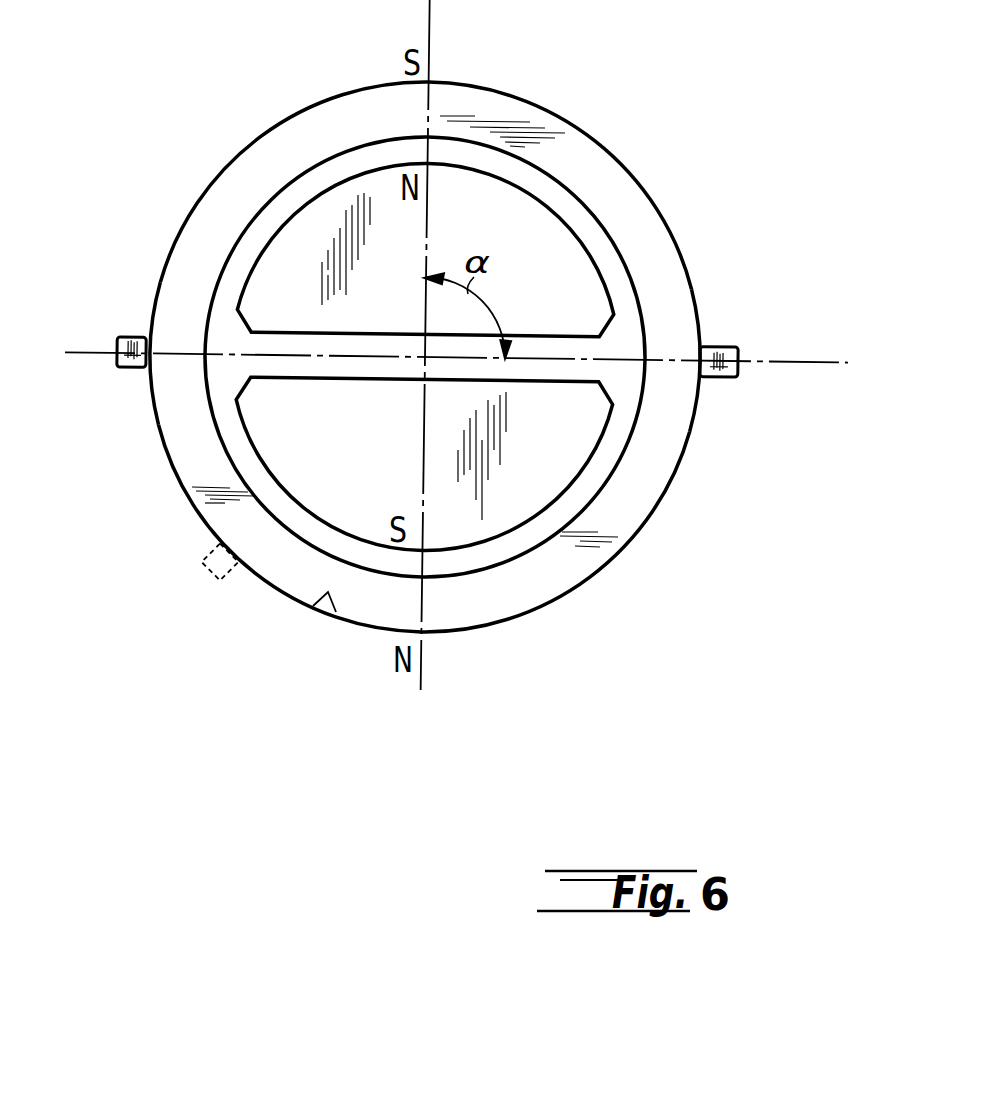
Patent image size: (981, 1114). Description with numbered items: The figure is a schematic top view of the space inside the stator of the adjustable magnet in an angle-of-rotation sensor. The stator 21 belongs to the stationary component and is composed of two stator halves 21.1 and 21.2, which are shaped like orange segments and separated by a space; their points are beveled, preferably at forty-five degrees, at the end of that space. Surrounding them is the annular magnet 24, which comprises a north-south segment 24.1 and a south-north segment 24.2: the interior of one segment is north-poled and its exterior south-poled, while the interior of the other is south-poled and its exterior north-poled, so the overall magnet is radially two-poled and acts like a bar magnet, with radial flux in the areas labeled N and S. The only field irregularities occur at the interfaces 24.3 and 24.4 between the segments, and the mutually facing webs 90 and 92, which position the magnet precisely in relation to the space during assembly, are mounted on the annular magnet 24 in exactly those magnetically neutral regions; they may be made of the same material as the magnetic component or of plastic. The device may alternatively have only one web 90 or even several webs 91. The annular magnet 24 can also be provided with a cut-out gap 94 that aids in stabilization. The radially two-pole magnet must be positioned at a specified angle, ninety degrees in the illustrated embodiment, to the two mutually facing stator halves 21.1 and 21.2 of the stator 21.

The stator 21 is at (560, 304).
The stator half 21.1 is at (566, 265).
The stator half 21.2 is at (541, 478).
The annular magnet 24 is at (600, 143).
The north-south segment 24.1 is at (277, 142).
The south-north segment 24.2 is at (552, 563).
The interface 24.3 is at (172, 352).
The interface 24.4 is at (672, 365).
The web 90 is at (125, 368).
The web 91 is at (205, 572).
The web 92 is at (736, 371).
The cut-out gap 94 is at (325, 611).